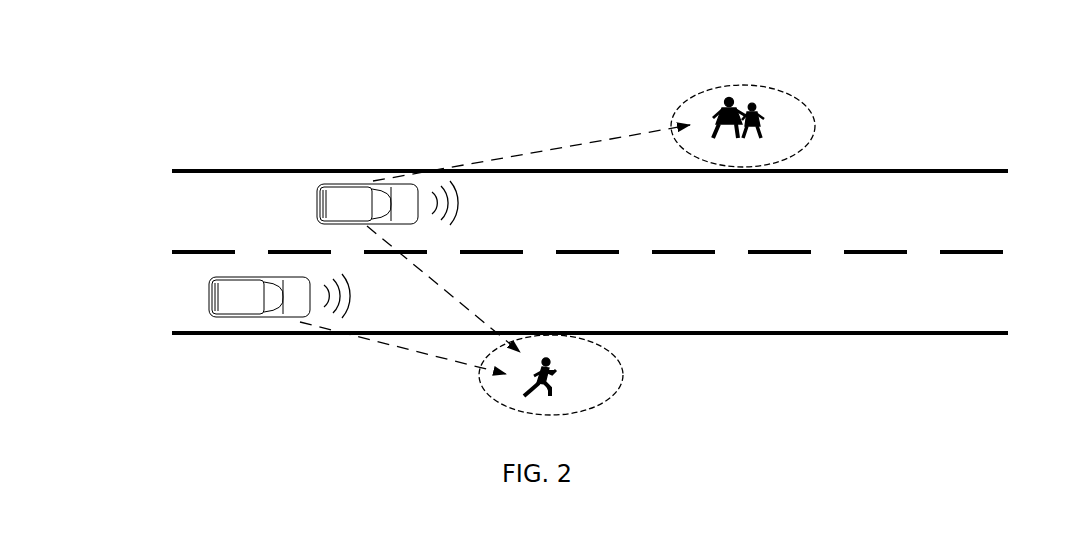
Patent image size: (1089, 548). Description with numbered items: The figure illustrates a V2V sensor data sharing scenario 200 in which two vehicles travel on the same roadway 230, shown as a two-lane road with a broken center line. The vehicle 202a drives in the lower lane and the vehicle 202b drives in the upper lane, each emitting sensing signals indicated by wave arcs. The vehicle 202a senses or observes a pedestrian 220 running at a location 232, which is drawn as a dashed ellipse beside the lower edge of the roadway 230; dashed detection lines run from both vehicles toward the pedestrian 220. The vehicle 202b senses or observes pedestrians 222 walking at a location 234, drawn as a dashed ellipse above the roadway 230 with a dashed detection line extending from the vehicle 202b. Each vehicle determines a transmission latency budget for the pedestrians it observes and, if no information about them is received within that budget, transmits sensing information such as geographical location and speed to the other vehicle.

The V2V sensor data sharing scenario 200 is at (621, 198).
The vehicle 202a is at (208, 302).
The vehicle 202b is at (315, 210).
The pedestrian 220 is at (572, 393).
The pedestrians 222 is at (788, 110).
The roadway 230 is at (987, 224).
The location 232 is at (622, 365).
The location 234 is at (815, 127).